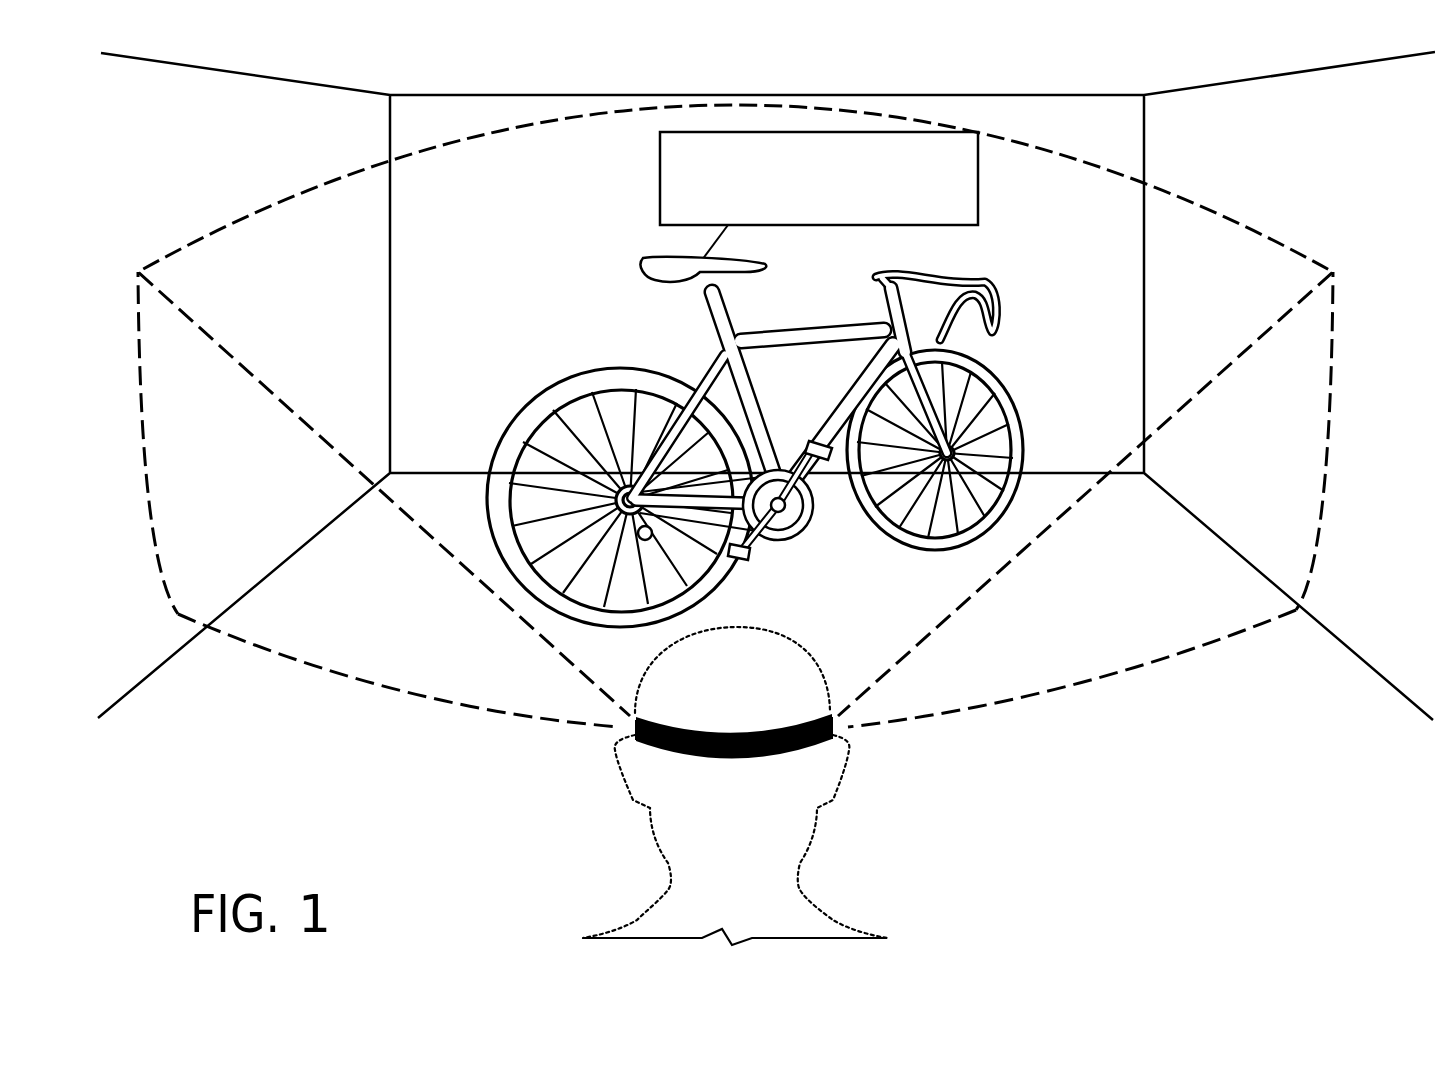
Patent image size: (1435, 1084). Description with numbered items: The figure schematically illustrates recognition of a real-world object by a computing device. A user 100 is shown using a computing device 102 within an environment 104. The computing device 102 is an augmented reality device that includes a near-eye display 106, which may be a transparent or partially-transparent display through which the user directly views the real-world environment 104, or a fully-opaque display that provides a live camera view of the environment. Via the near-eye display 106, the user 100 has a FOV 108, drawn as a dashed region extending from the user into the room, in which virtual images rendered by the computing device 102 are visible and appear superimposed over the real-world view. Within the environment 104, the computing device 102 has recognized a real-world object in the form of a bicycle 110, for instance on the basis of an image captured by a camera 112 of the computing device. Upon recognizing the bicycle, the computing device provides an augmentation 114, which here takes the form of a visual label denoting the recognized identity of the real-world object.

The user 100 is at (716, 692).
The computing device 102 is at (833, 762).
The environment 104 is at (265, 118).
The near-eye display 106 is at (633, 730).
The FOV 108 is at (226, 222).
The bicycle 110 is at (536, 410).
The camera 112 is at (842, 696).
The augmentation 114 is at (965, 217).